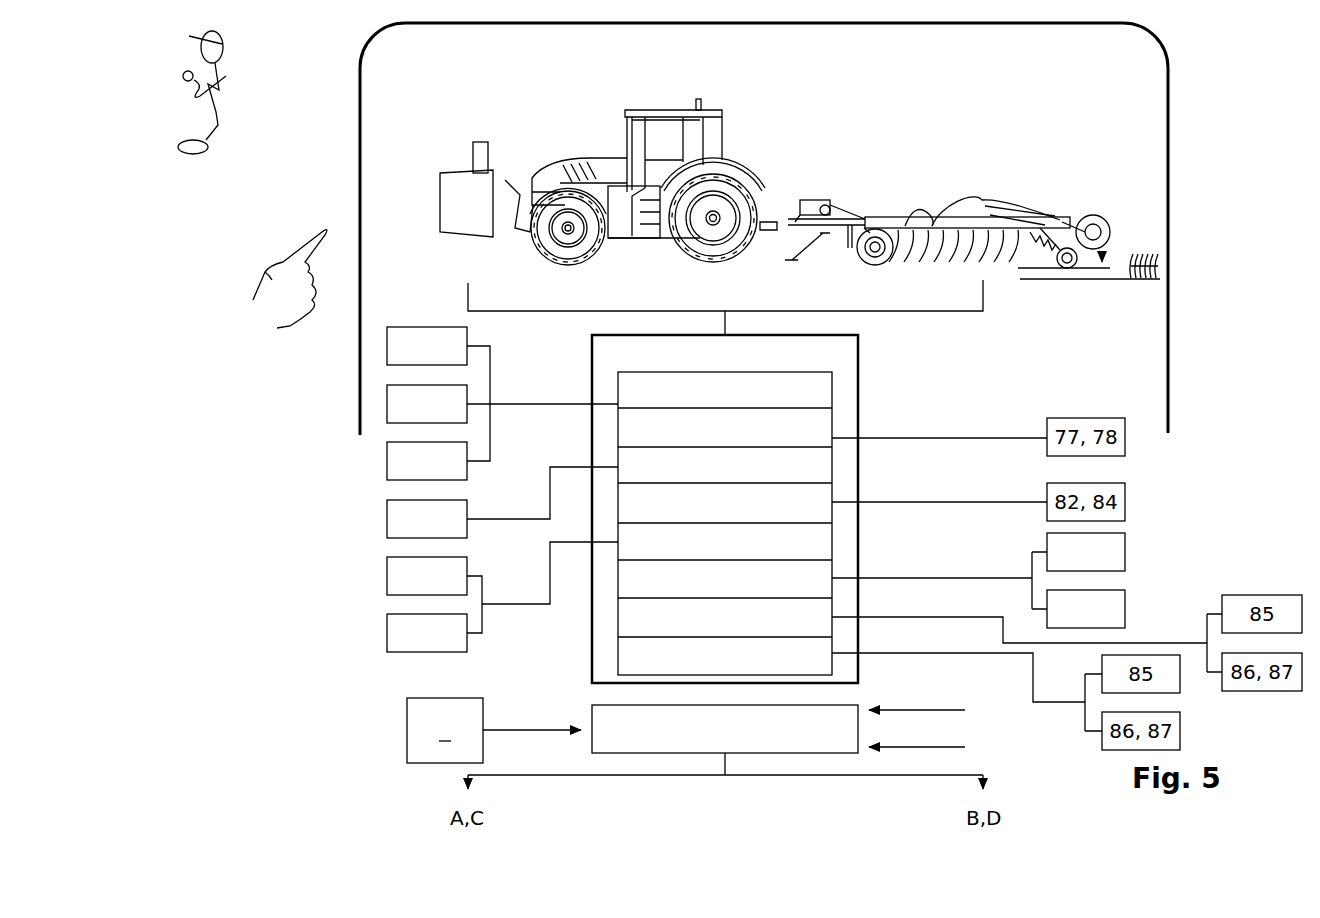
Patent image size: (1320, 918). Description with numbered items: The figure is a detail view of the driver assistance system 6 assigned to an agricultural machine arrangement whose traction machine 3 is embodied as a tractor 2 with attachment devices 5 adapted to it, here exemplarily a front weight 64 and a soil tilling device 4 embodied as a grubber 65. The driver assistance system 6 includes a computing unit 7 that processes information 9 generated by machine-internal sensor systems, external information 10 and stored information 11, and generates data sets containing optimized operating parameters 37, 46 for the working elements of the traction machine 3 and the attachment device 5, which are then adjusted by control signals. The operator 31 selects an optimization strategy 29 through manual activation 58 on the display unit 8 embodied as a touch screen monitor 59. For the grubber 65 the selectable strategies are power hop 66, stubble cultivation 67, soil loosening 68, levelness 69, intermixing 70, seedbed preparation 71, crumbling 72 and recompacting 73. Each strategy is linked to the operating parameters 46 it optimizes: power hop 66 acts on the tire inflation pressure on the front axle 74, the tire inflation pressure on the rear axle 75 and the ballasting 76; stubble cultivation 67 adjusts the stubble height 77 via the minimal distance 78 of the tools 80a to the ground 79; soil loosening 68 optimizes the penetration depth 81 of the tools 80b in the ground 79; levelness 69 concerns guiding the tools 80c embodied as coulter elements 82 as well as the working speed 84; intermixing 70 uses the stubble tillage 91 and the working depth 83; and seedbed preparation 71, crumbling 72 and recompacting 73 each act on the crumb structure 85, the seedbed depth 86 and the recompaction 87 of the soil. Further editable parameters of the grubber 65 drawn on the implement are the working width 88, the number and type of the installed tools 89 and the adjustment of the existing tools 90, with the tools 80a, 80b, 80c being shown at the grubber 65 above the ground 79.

The tractor 2 is at (641, 155).
The traction machine 3 is at (670, 100).
The soil tilling device 4 is at (1057, 200).
The attachment device 5 is at (490, 140).
The driver assistance system 6 is at (1188, 165).
The computing unit 7 is at (445, 730).
The display unit 8 is at (715, 229).
The information generated by machine-internal sensor systems 9 is at (929, 713).
The external information 10 is at (934, 748).
The stored information 11 is at (527, 728).
The optimization strategy 29 is at (603, 447).
The operator 31 is at (204, 55).
The optimized operating parameters 37 is at (725, 729).
The operating parameters 46 is at (725, 729).
The manual activation 58 is at (268, 270).
The touch screen monitor 59 is at (386, 139).
The front weight 64 is at (456, 160).
The grubber 65 is at (966, 188).
The optimization strategy power hop 66 is at (830, 377).
The optimization strategy stubble cultivation 67 is at (830, 418).
The optimization strategy soil loosening 68 is at (830, 455).
The optimization strategy levelness 69 is at (830, 496).
The optimization strategy intermixing 70 is at (830, 534).
The optimization strategy seedbed preparation 71 is at (830, 574).
The optimization strategy crumbling 72 is at (830, 606).
The optimization strategy recompacting 73 is at (830, 645).
The tire inflation pressure on a front axle 74 is at (427, 346).
The tire inflation pressure on a rear axle 75 is at (427, 404).
The ballasting 76 is at (427, 461).
The stubble height 77 is at (1147, 249).
The minimal distance 78 is at (1110, 281).
The ground 79 is at (1063, 310).
The tools 80a is at (1032, 213).
The tools 80b is at (936, 226).
The tools 80c is at (1023, 256).
The penetration depth 81 is at (427, 519).
The coulter elements 82 is at (1041, 307).
The working depth 83 is at (427, 576).
The working speed 84 is at (427, 519).
The crumb structure 85 is at (1086, 552).
The seedbed depth 86 is at (1086, 609).
The recompaction 87 is at (1086, 609).
The working width 88 is at (812, 243).
The number and type of installed tools 89 is at (940, 270).
The adjustment of the existing tools 90 is at (955, 262).
The stubble tillage 91 is at (427, 633).